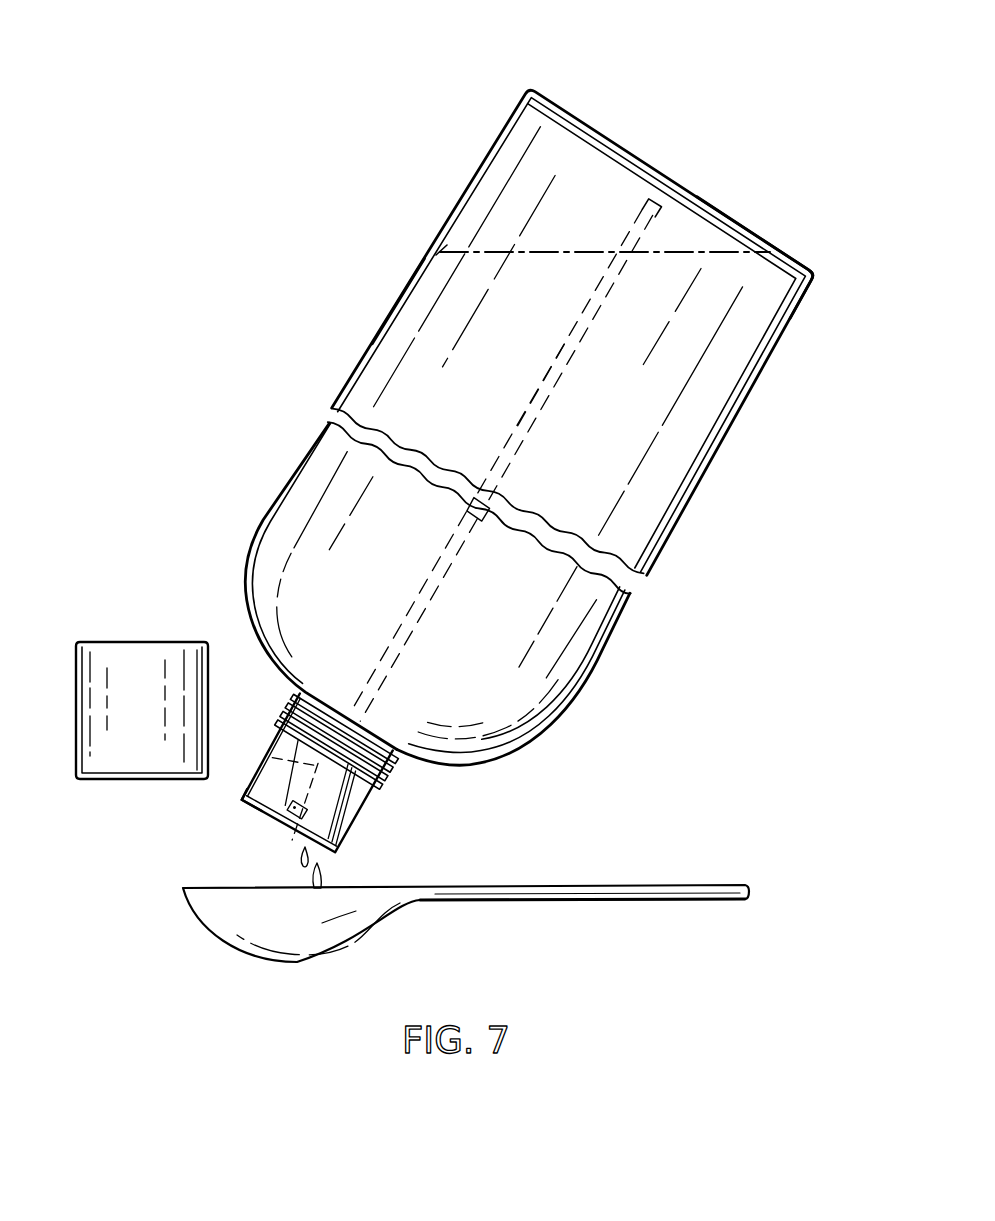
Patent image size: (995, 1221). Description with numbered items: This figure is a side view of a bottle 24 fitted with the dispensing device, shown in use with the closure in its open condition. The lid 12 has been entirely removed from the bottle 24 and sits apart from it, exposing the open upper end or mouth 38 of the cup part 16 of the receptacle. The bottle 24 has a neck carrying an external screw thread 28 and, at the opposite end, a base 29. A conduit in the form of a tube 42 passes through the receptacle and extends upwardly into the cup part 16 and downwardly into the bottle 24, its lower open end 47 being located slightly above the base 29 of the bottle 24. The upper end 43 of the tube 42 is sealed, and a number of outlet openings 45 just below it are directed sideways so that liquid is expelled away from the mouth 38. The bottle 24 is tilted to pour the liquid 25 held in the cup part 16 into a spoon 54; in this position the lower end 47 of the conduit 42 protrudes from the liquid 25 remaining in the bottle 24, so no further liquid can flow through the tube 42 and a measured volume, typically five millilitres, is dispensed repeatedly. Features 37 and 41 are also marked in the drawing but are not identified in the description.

The lid 12 is at (66, 703).
The upper hollow cylindrical portion 16 is at (278, 733).
The bottle 24 is at (246, 528).
The liquid 25 is at (408, 315).
The external screw thread 28 is at (393, 763).
The base 29 is at (763, 232).
The indicator line 37 is at (553, 377).
The open mouth 38 is at (240, 809).
The insert 41 is at (275, 756).
The tube 42 is at (381, 668).
The upper end 43 is at (284, 830).
The outlet openings 45 is at (356, 833).
The lower open end 47 is at (664, 198).
The spoon 54 is at (561, 888).